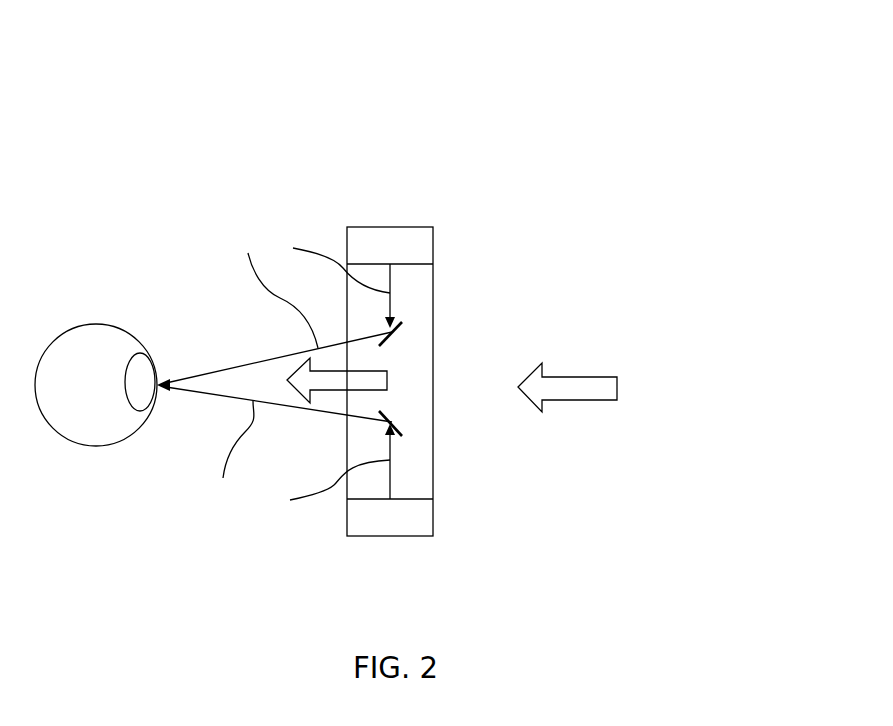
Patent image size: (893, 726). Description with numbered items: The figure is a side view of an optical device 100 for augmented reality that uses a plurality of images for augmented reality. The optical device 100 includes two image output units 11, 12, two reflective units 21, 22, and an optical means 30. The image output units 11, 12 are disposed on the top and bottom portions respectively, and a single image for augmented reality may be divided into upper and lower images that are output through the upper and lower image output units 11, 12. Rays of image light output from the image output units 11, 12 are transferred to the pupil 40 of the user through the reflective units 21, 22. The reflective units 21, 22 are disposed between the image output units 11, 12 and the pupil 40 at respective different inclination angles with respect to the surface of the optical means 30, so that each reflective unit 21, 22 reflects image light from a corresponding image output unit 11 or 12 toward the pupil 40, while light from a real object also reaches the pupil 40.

The optical device for augmented reality 100 is at (512, 112).
The image output unit 11 is at (390, 225).
The image output unit 12 is at (393, 537).
The optical means 30 is at (435, 293).
The reflective unit 21 is at (393, 332).
The reflective unit 22 is at (393, 425).
The pupil 40 is at (150, 357).